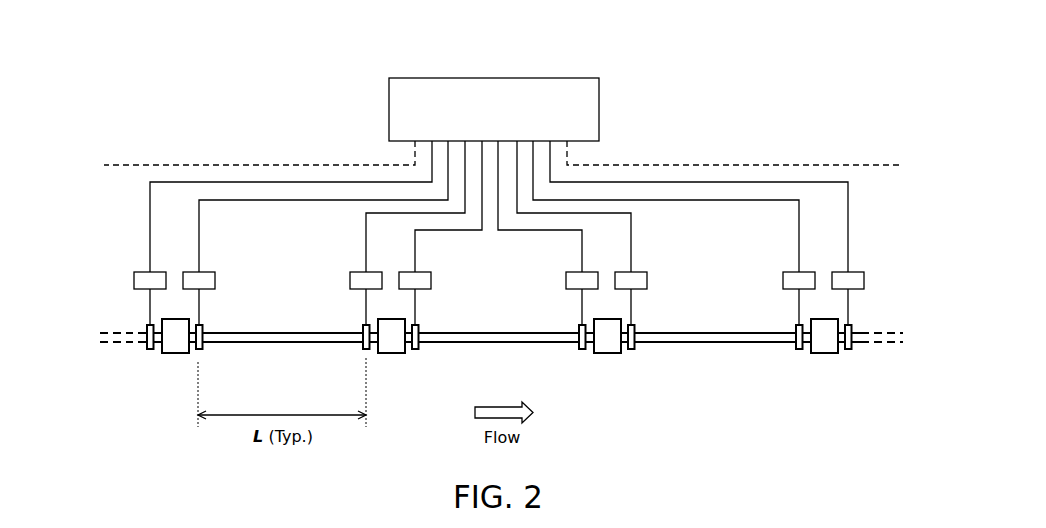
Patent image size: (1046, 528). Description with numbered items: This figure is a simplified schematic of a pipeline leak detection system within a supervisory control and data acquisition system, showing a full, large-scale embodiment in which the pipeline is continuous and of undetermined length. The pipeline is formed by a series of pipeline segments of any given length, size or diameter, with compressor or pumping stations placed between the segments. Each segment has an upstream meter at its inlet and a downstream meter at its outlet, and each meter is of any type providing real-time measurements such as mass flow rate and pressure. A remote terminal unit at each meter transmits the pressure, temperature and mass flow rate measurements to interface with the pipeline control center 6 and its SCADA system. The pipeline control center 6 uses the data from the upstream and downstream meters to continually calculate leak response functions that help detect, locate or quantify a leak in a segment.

The pipeline control center 6 is at (582, 78).